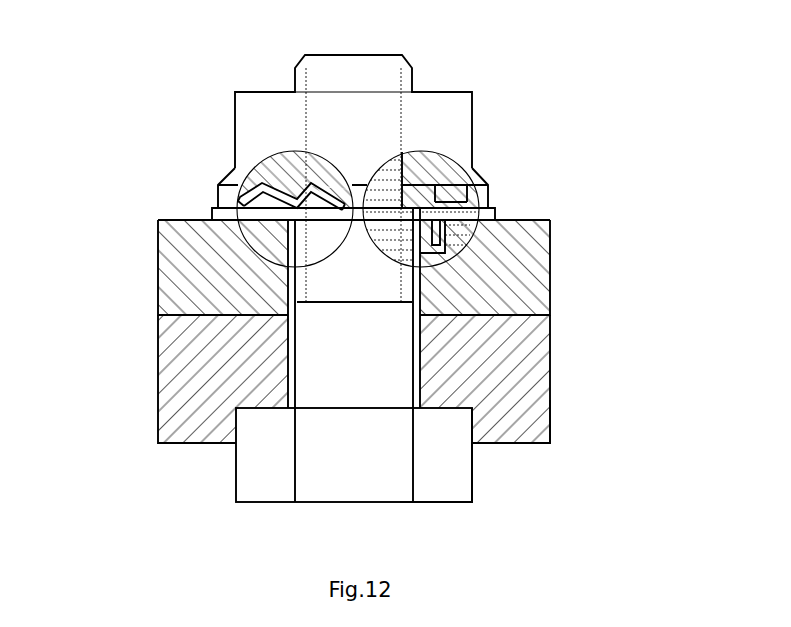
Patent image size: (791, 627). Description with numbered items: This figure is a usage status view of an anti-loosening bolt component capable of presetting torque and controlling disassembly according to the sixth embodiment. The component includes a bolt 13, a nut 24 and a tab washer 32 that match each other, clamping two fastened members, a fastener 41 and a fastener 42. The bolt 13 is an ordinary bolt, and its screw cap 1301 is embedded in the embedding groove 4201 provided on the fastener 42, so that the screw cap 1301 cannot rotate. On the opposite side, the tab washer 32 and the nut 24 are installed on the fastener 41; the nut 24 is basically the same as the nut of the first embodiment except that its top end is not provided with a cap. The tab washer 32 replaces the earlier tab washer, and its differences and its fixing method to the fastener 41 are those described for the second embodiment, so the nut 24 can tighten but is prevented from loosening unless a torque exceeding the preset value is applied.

The nut 24 is at (265, 128).
The tab washer 32 is at (212, 213).
The fastener 41 is at (197, 260).
The fastener 42 is at (359, 402).
The bolt 13 is at (359, 476).
The embedding groove 4201 is at (472, 427).
The screw cap 1301 is at (472, 482).